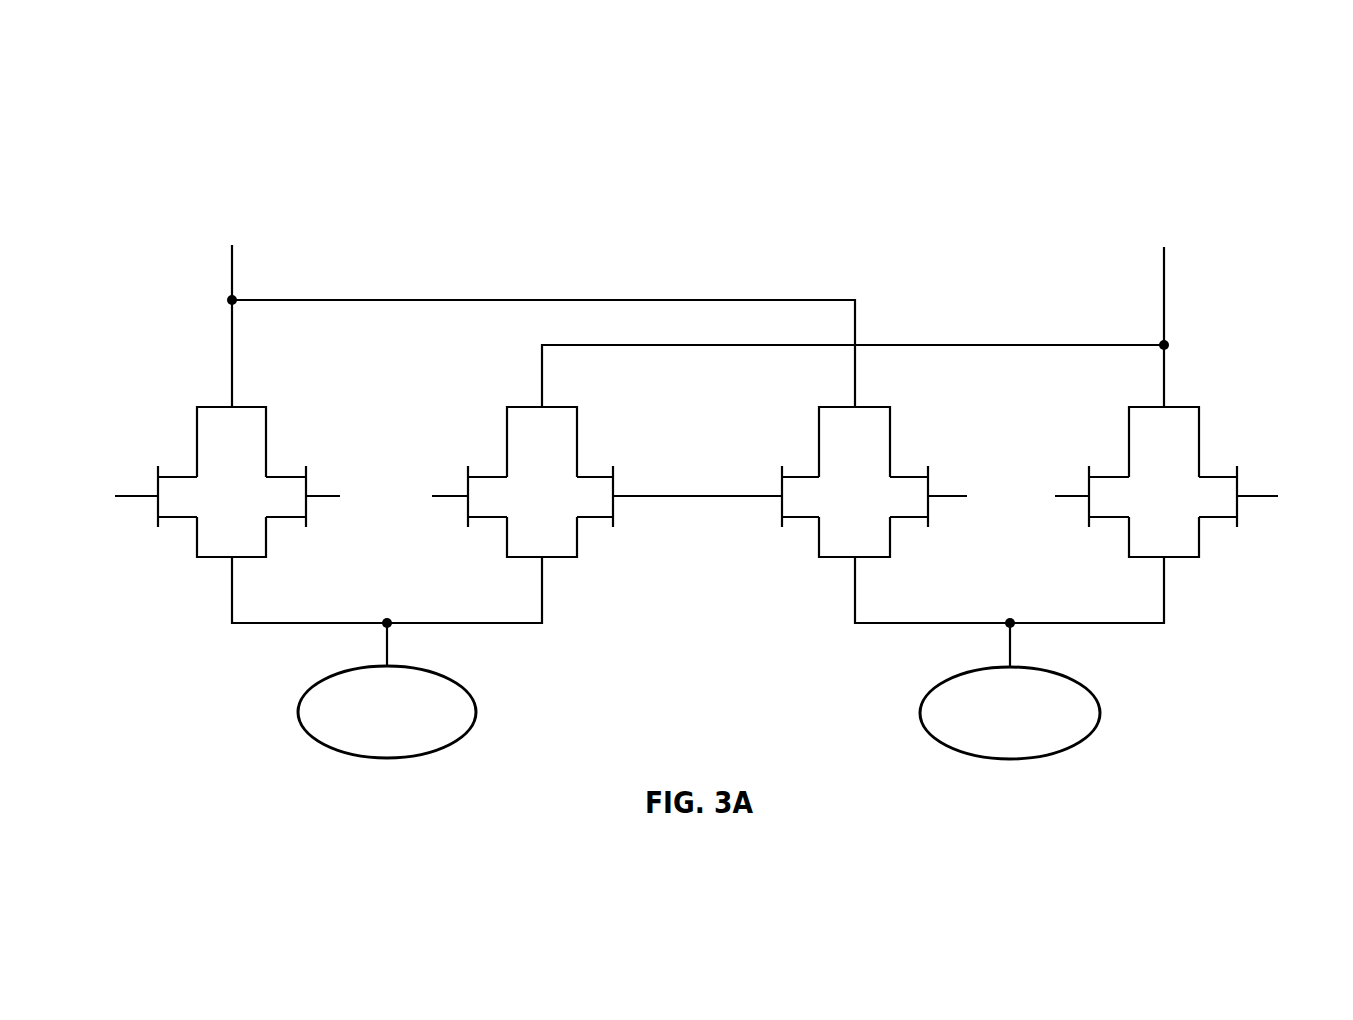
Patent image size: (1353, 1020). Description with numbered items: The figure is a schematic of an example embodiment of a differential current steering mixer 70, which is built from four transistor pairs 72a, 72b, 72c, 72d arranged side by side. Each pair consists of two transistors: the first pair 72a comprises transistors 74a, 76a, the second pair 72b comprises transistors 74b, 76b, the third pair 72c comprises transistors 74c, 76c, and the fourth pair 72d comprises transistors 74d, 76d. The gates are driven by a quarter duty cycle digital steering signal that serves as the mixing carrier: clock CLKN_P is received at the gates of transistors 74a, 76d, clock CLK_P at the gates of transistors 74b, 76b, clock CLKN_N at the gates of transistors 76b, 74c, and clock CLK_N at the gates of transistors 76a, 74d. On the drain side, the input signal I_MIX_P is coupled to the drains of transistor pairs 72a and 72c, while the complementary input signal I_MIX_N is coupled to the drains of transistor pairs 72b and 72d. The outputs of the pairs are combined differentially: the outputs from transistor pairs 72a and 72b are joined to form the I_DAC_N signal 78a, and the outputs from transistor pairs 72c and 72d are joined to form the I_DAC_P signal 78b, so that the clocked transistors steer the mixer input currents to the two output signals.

The mixer 70 is at (212, 108).
The transistor pair 72a is at (287, 415).
The transistor pair 72b is at (600, 430).
The transistor pair 72c is at (915, 430).
The transistor pair 72d is at (1220, 430).
The transistor 74a is at (187, 505).
The transistor 74b is at (488, 505).
The transistor 74c is at (808, 505).
The transistor 74d is at (1115, 503).
The transistor 76a is at (287, 507).
The transistor 76b is at (587, 507).
The transistor 76c is at (907, 507).
The transistor 76d is at (1213, 507).
The I_DAC_N signal 78a is at (315, 742).
The I_DAC_P signal 78b is at (937, 742).